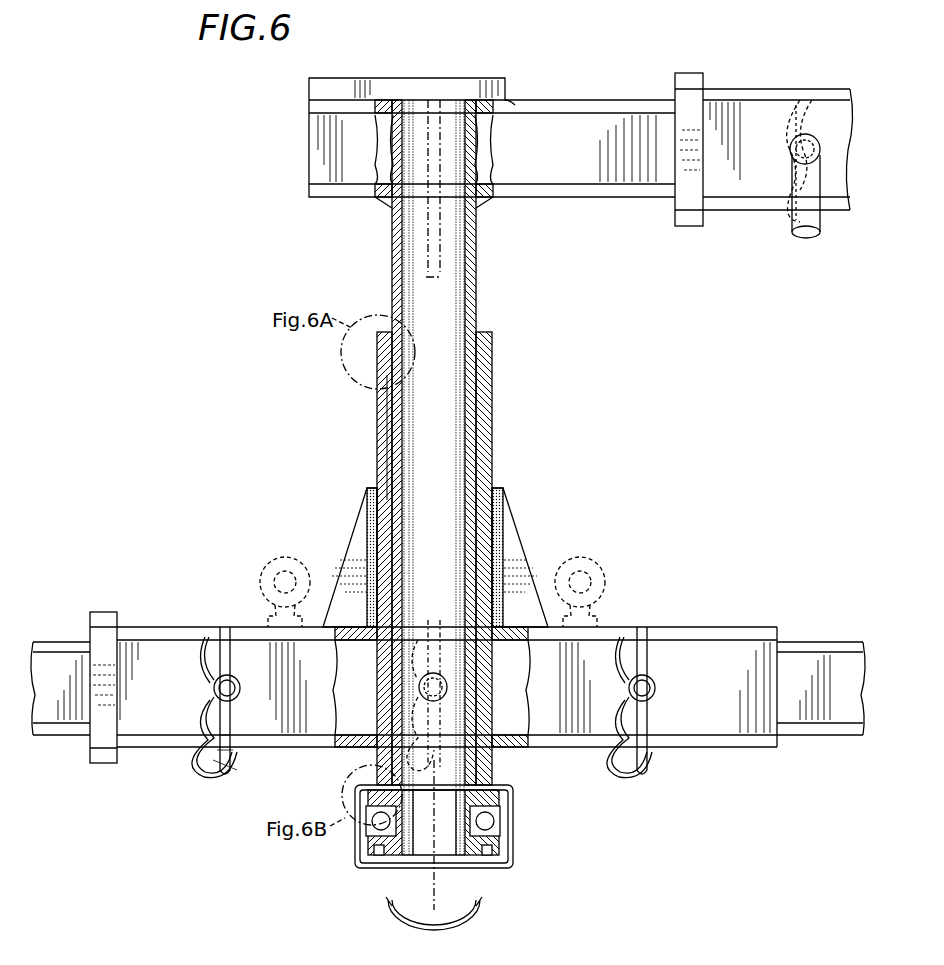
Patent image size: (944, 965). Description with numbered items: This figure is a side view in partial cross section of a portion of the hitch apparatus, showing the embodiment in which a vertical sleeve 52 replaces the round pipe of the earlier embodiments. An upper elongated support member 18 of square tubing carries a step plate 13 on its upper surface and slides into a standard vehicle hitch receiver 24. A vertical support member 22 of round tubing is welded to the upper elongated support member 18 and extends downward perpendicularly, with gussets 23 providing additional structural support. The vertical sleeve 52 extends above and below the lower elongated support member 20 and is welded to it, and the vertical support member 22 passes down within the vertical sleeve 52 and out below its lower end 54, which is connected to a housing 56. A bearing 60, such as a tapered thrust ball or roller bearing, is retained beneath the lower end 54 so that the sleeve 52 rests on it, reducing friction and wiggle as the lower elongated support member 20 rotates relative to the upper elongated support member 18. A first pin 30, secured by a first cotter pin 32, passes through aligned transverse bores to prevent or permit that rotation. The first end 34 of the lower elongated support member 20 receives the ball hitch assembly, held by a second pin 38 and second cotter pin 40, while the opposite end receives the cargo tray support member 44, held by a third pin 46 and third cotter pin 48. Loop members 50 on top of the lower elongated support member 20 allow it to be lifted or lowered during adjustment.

The step plate 13 is at (420, 78).
The upper elongated support member 18 is at (580, 100).
The lower elongated support member 20 is at (173, 627).
The vertical support member 22 is at (471, 296).
The gusset 23 is at (428, 236).
The hitch receiver 24 is at (760, 89).
The first pin 30 is at (418, 712).
The first cotter pin 32 is at (447, 687).
The first end 34 is at (102, 763).
The second pin 38 is at (234, 772).
The second cotter pin 40 is at (205, 768).
The cargo tray support member 44 is at (820, 732).
The third pin 46 is at (650, 772).
The third cotter pin 48 is at (620, 768).
The loop member 50 is at (285, 557).
The vertical sleeve 52 is at (485, 396).
The lower end of the vertical sleeve 54 is at (505, 800).
The housing 56 is at (492, 872).
The bearing 60 is at (495, 821).